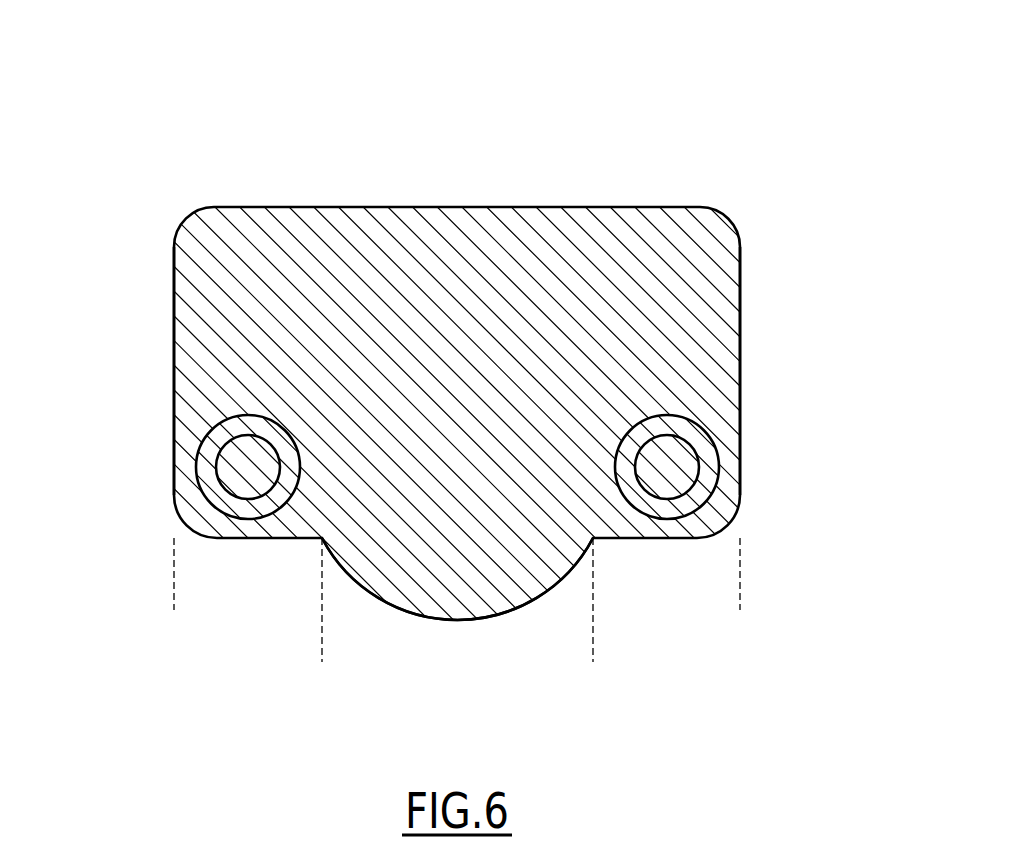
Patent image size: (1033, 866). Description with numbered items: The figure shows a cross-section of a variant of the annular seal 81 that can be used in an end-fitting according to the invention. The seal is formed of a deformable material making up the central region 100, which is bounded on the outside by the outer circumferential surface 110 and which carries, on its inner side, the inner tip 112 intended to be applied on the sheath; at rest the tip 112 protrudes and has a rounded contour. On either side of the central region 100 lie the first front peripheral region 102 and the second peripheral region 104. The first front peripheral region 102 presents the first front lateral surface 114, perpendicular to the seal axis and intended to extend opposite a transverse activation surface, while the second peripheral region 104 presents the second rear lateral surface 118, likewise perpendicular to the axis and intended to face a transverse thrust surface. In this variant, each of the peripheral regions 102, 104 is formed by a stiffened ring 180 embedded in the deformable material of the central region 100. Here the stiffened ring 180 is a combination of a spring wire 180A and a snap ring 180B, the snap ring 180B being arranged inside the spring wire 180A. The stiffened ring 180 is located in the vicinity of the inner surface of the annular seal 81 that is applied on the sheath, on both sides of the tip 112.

The annular seal 81 is at (758, 92).
The outer circumferential surface 110 is at (458, 207).
The first front lateral surface 114 is at (174, 305).
The second rear lateral surface 118 is at (740, 305).
The inner tip 112 is at (400, 608).
The stiffened ring 180 is at (197, 450).
The spring wire 180A is at (215, 490).
The snap ring 180B is at (248, 450).
The first front peripheral region 102 is at (322, 589).
The second peripheral region 104 is at (593, 589).
The central region 100 is at (593, 642).